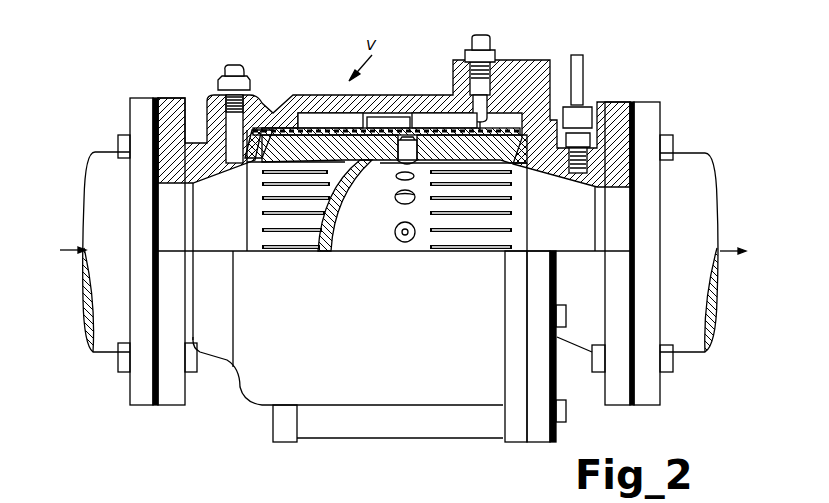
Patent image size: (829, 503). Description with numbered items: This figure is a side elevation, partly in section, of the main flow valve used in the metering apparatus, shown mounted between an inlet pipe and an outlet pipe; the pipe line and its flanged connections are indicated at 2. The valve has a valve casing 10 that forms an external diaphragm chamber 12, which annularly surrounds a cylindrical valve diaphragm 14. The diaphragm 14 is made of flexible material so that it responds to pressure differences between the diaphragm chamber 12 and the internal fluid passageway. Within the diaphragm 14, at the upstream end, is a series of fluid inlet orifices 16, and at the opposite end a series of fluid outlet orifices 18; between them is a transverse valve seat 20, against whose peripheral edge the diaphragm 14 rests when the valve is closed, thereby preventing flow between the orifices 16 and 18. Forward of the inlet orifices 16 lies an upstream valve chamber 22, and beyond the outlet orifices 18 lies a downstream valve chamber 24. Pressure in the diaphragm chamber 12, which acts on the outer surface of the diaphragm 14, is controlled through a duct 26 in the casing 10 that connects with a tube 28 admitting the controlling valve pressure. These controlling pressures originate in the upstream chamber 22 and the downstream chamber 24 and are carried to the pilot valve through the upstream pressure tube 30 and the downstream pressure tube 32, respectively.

The pipe line 2 is at (100, 356).
The valve casing 10 is at (385, 103).
The external diaphragm chamber 12 is at (325, 118).
The cylindrical valve diaphragm 14 is at (312, 135).
The fluid inlet orifices 16 is at (277, 153).
The fluid outlet orifices 18 is at (500, 158).
The transverse valve seat 20 is at (337, 200).
The upstream valve chamber 22 is at (371, 334).
The downstream valve chamber 24 is at (577, 334).
The duct 26 is at (470, 85).
The tube 28 is at (472, 42).
The upstream pressure tube 30 is at (241, 70).
The downstream pressure tube 32 is at (590, 78).